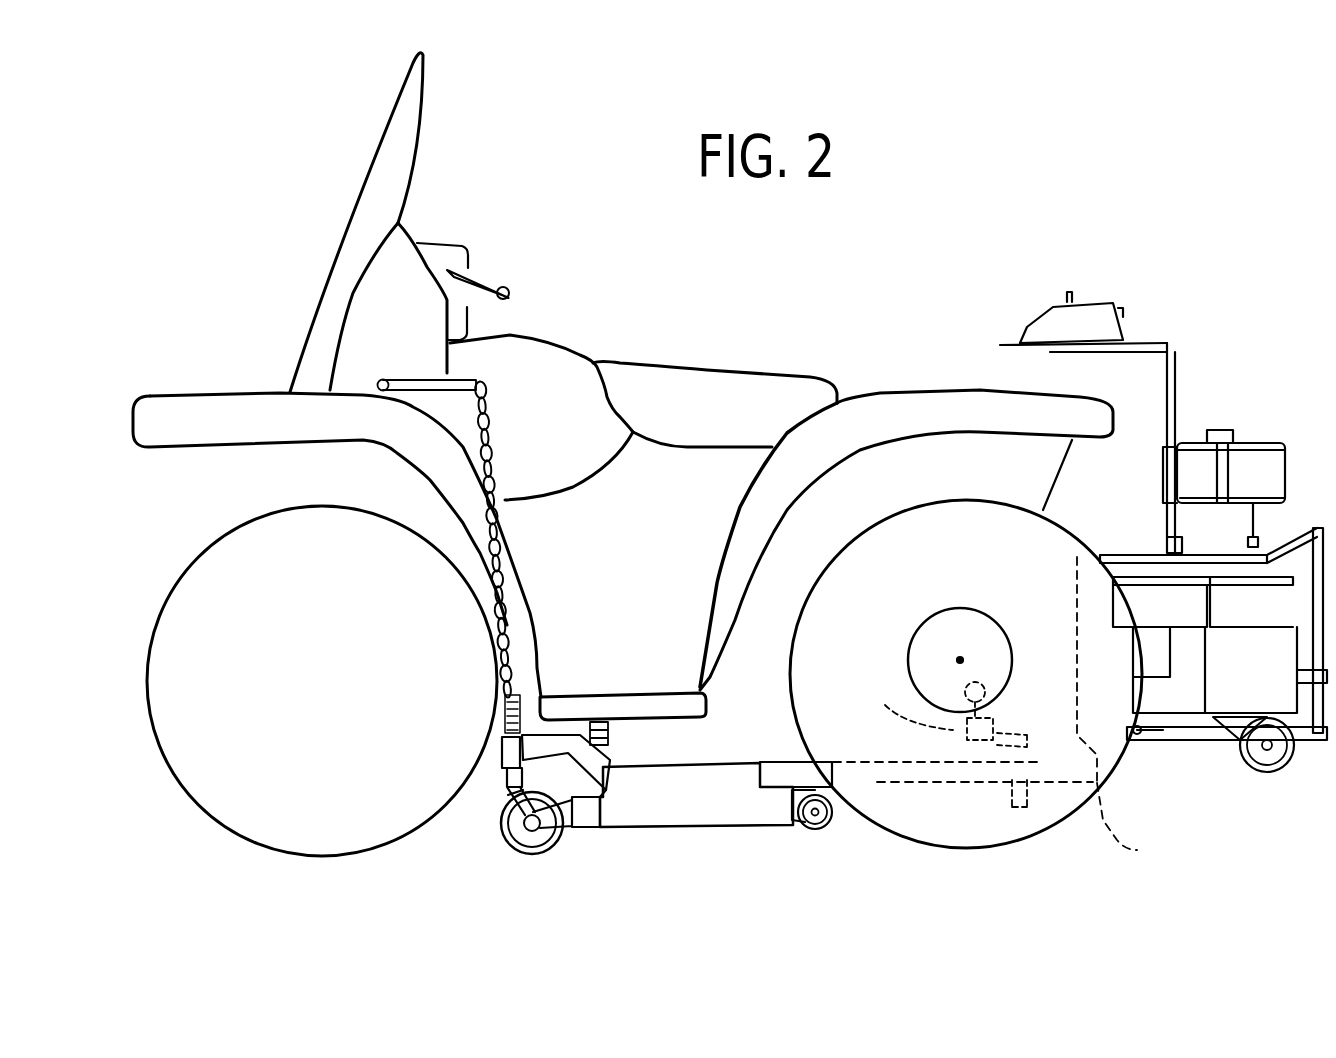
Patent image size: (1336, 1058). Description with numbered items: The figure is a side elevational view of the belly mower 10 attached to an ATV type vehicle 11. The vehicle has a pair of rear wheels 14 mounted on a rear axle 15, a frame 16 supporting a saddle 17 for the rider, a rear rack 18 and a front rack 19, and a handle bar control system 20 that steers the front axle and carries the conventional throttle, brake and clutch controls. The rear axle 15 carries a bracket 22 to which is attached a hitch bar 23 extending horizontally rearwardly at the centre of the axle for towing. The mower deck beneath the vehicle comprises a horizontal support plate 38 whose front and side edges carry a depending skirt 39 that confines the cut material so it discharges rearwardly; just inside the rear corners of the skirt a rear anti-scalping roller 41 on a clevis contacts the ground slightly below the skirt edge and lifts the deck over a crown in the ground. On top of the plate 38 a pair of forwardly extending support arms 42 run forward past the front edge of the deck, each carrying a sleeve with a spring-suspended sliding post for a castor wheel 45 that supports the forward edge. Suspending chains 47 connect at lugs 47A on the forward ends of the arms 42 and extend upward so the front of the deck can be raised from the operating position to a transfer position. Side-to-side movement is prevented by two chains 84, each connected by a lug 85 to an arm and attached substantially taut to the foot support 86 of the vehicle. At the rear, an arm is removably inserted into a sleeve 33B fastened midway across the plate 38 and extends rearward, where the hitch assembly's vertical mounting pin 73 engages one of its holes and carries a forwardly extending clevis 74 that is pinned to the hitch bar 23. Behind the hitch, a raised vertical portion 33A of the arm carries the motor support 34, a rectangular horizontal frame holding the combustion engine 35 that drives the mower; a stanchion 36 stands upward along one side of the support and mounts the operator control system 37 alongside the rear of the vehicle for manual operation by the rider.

The belly mower 10 is at (818, 842).
The ATV type vehicle 11 is at (763, 353).
The rear wheels 14 is at (978, 535).
The rear axle 15 is at (940, 612).
The frame 16 is at (633, 528).
The saddle 17 is at (692, 400).
The rear rack 18 is at (812, 392).
The front rack 19 is at (263, 333).
The handle bar control system 20 is at (445, 232).
The bracket 22 is at (990, 665).
The hitch bar 23 is at (903, 700).
The raised vertical portion 33A is at (1137, 850).
The sleeve 33B is at (780, 767).
The motor support 34 is at (1120, 767).
The combustion engine 35 is at (1120, 523).
The stanchion 36 is at (1177, 377).
The operator control system 37 is at (1087, 320).
The horizontal support plate 38 is at (600, 827).
The depending skirt 39 is at (702, 813).
The rear anti-scalping roller 41 is at (800, 829).
The forwardly extending support arms 42 is at (648, 777).
The castor wheel 45 is at (537, 853).
The suspending chains 47 is at (497, 617).
The lugs 47A is at (500, 780).
The vertical mounting pin 73 is at (1017, 807).
The clevis 74 is at (1000, 727).
The chains 84 is at (617, 705).
The lug 85 is at (587, 723).
The foot support 86 is at (603, 743).